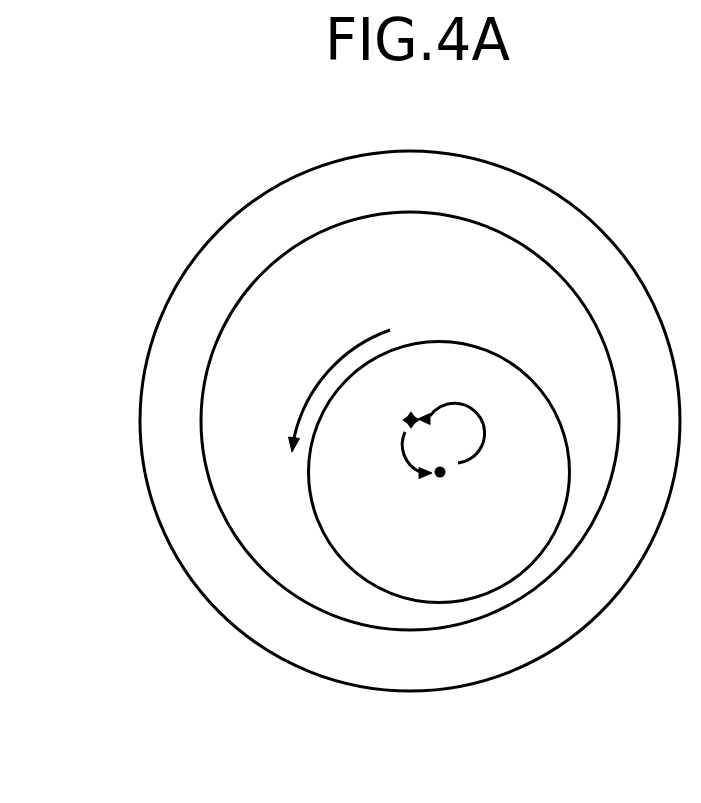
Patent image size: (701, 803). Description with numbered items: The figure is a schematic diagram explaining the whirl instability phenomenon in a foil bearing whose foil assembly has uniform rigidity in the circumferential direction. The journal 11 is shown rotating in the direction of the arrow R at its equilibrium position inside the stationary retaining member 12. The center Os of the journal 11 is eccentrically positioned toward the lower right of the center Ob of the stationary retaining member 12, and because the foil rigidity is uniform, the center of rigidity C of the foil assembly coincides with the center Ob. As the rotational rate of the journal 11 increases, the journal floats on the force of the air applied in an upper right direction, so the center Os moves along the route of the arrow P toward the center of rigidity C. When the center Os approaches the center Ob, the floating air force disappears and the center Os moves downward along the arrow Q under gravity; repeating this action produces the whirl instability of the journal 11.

The journal 11 is at (525, 381).
The stationary retaining member 12 is at (555, 232).
The arrow R is at (340, 391).
The center of rigidity C is at (407, 414).
The arrow P is at (464, 432).
The arrow Q is at (407, 458).
The center of the stationary retaining member Ob is at (410, 421).
The center of the journal Os is at (443, 475).